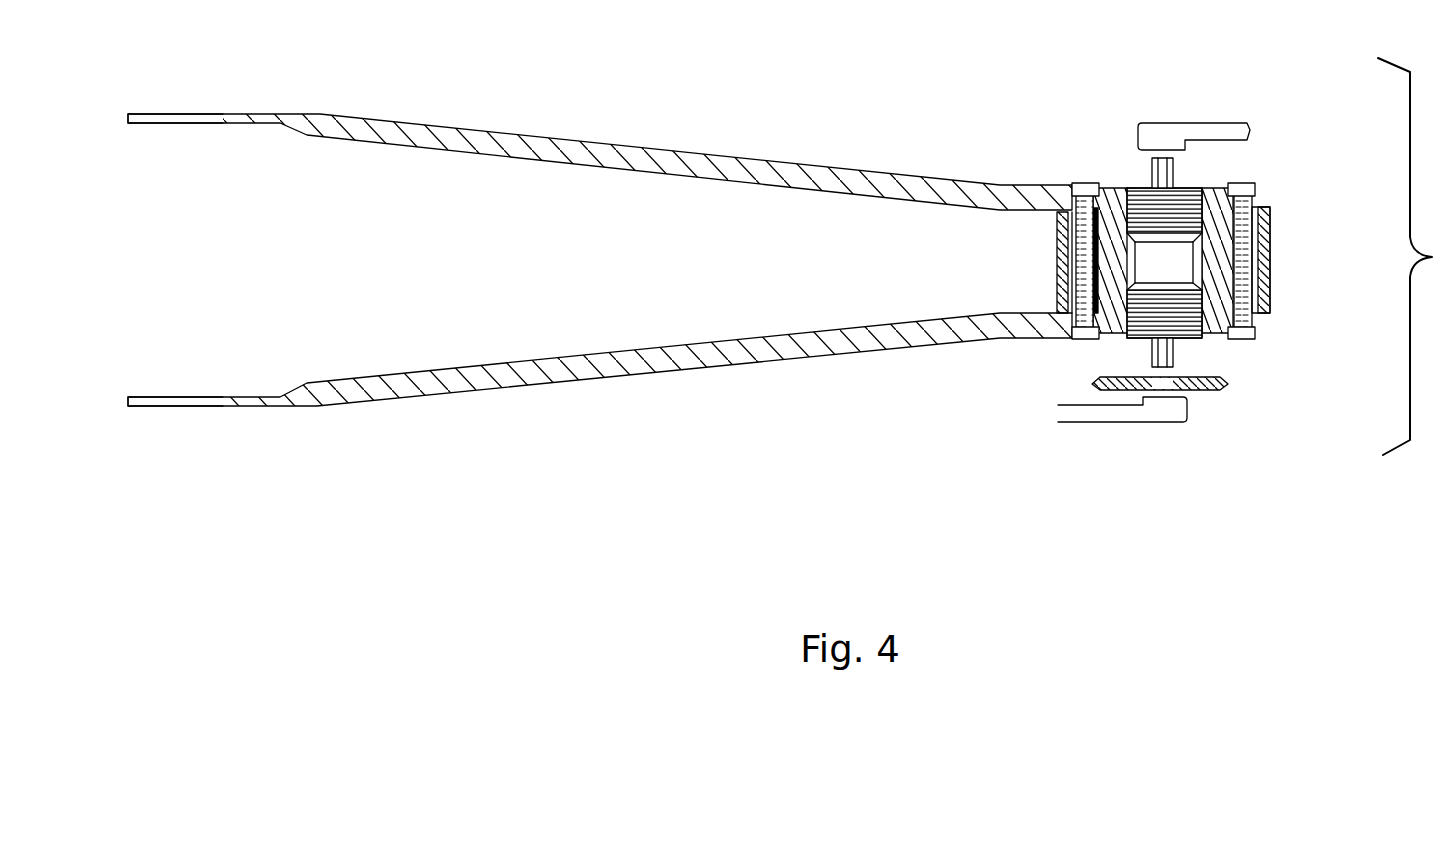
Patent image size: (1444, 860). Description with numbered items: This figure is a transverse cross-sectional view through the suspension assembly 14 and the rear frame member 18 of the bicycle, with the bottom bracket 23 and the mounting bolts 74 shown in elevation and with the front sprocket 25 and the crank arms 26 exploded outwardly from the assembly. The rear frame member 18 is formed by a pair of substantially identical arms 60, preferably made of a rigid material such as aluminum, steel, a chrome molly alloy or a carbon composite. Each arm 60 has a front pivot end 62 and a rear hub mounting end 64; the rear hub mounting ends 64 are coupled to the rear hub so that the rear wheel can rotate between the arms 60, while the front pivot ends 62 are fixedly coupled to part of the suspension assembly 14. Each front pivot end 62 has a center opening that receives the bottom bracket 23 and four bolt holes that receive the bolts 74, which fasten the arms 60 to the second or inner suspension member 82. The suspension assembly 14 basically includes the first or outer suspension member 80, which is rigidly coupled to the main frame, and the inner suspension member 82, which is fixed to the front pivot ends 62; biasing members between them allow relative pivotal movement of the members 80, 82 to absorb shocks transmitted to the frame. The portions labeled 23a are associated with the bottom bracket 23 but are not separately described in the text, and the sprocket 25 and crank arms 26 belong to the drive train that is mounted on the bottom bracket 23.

The suspension assembly 14 is at (1119, 270).
The rear frame member 18 is at (600, 270).
The arms 60 is at (600, 270).
The rear hub mounting end 64 is at (212, 113).
The front pivot end 62 is at (1107, 186).
The bolts 74 is at (1078, 183).
The first or outer suspension member 80 is at (1057, 256).
The second or inner suspension member 82 is at (1135, 262).
The bottom bracket 23 is at (1241, 290).
The axle stubs 23a is at (1175, 168).
The front chain ring or sprocket 25 is at (1213, 391).
The crank arms 26 is at (1212, 122).